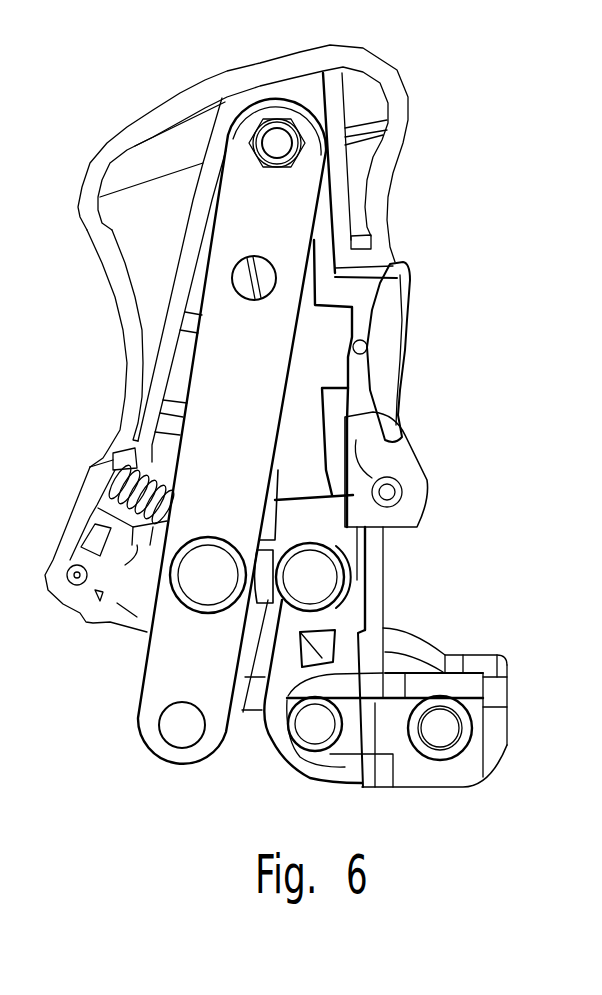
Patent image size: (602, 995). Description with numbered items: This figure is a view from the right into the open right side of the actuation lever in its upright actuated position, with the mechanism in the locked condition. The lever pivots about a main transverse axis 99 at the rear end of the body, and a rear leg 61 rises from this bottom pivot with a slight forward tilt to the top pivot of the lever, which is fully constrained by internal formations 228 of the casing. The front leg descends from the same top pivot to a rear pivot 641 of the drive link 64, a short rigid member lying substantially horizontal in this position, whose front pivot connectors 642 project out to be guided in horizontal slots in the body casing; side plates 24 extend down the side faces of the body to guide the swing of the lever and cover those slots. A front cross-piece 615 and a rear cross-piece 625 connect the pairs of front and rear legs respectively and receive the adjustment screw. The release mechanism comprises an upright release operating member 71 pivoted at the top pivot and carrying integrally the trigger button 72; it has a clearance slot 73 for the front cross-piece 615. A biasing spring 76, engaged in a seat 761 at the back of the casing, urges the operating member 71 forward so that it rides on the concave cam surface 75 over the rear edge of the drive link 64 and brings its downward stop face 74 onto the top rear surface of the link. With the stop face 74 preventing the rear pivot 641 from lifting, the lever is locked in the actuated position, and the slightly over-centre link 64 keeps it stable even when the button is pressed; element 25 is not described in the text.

The internal formations 228 is at (215, 147).
The rear leg 61 is at (203, 400).
The seat 761 is at (113, 462).
The biasing spring 76 is at (112, 496).
The trigger button 72 is at (400, 335).
The release operating member 71 is at (310, 440).
The clearance slot 73 is at (347, 547).
The front cross-piece 615 is at (313, 577).
The rear cross-piece 625 is at (198, 592).
The main transverse axis 99 is at (172, 735).
The stop face 74 is at (297, 698).
The drive link 64 is at (387, 743).
The rear pivot 641 is at (318, 738).
The concave cam surface 75 is at (361, 776).
The front pivot connectors 642 is at (475, 720).
The side plates 24 is at (490, 758).
The bracket arm 25 is at (490, 653).